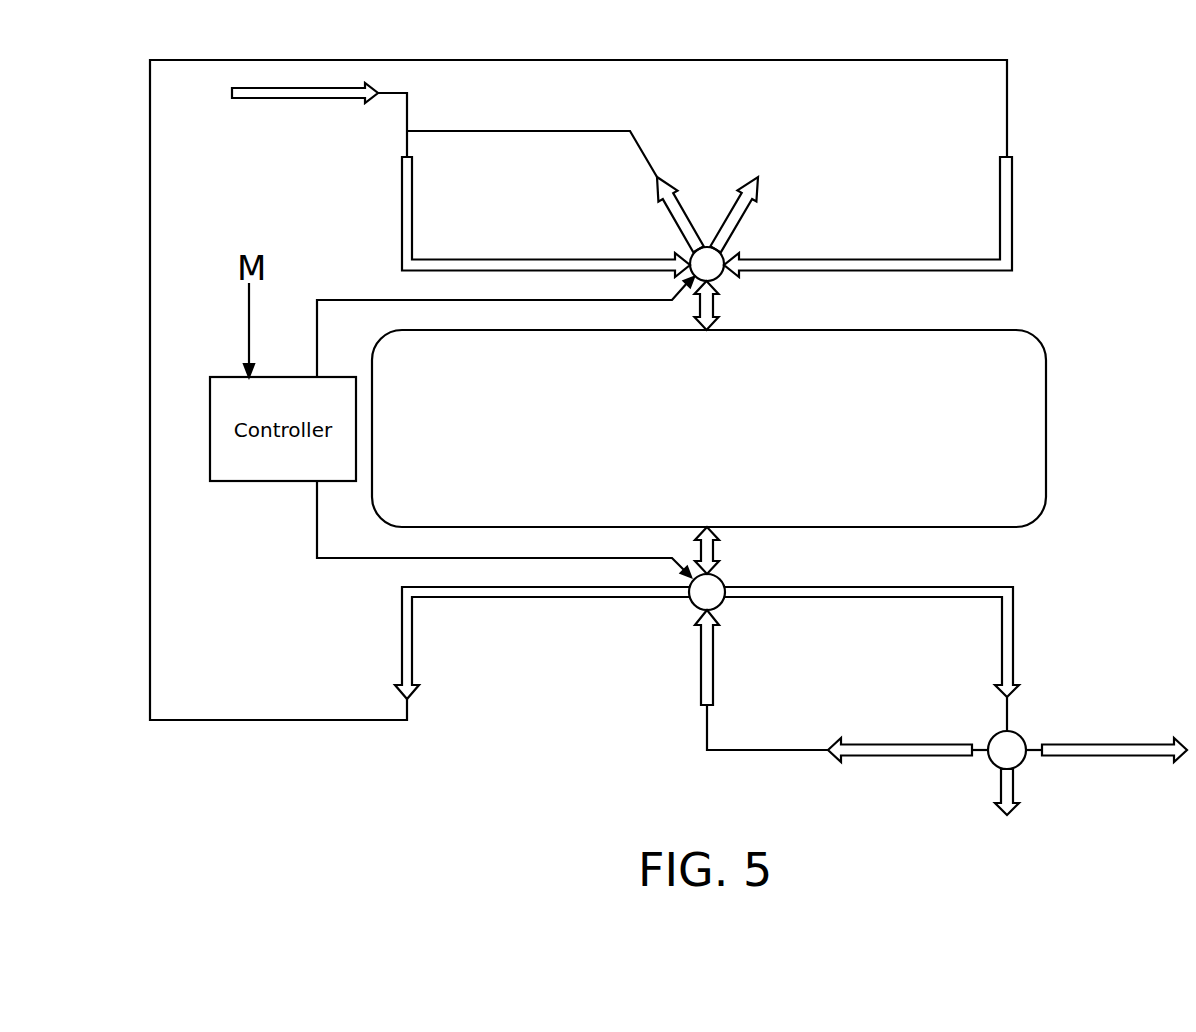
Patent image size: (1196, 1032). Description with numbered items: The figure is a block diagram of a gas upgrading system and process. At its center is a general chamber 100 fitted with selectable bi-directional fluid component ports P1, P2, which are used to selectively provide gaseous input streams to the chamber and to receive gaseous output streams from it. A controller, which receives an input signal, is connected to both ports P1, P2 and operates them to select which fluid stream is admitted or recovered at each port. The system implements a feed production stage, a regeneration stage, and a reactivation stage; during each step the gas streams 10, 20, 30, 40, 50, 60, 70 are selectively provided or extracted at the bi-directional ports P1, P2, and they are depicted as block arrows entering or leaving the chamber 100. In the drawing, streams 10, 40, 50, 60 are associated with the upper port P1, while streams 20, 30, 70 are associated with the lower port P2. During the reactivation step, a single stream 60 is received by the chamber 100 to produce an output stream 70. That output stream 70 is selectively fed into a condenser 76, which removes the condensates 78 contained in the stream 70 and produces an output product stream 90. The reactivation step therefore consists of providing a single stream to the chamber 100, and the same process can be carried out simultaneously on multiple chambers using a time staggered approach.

The gas stream 10 is at (402, 212).
The gas stream 20 is at (413, 640).
The gas stream 30 is at (713, 662).
The gas stream 40 is at (670, 218).
The gas stream 50 is at (745, 218).
The single stream 60 is at (1013, 212).
The output stream 70 is at (1013, 632).
The condenser 76 is at (1010, 748).
The condensates 78 is at (1013, 788).
The output product stream 90 is at (1118, 757).
The chamber 100 is at (1060, 326).
The selectable bi-directional fluid component port P1 is at (710, 268).
The selectable bi-directional fluid component port P2 is at (710, 590).